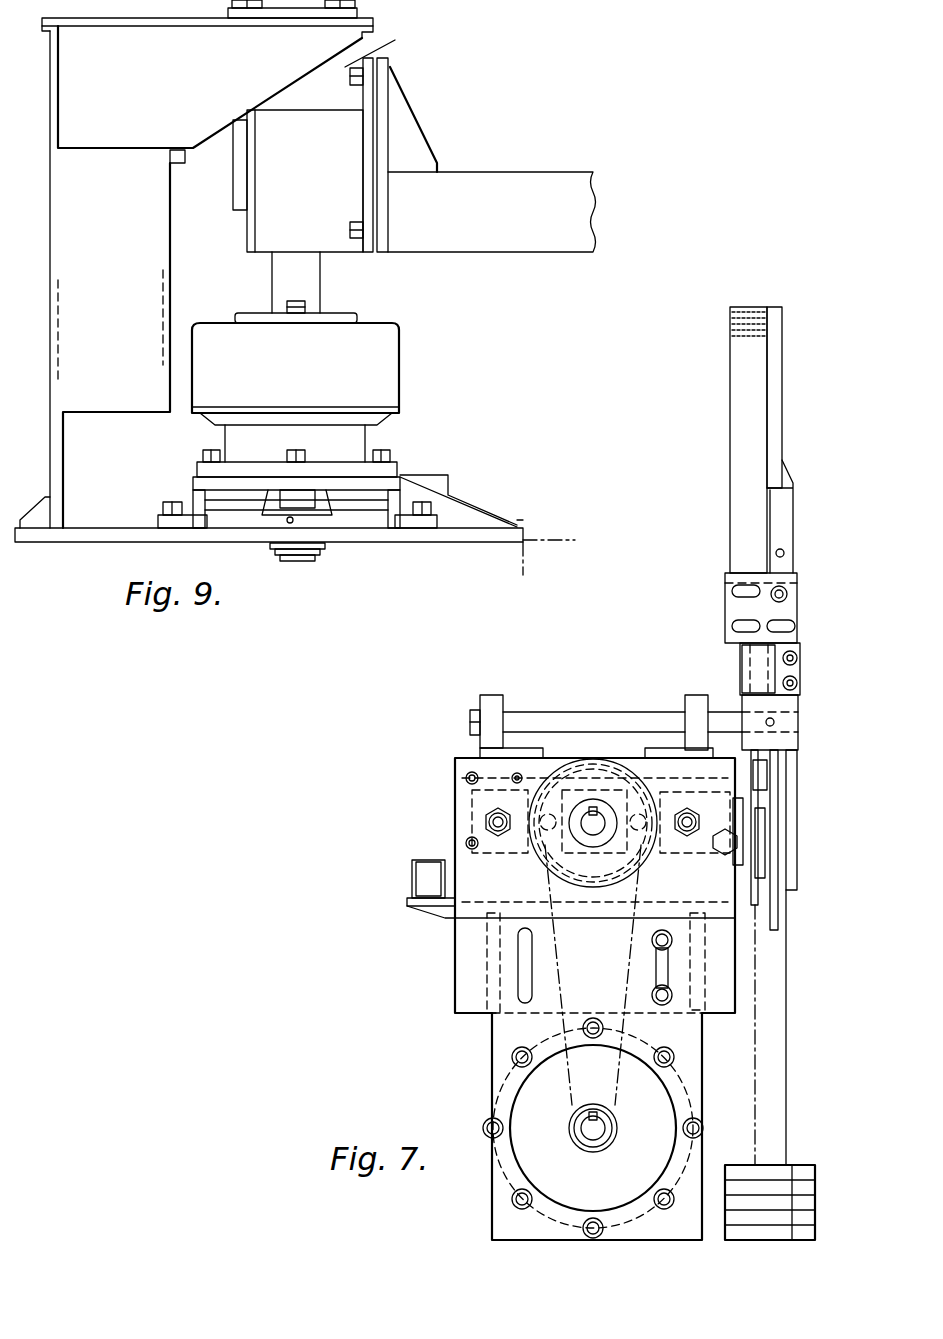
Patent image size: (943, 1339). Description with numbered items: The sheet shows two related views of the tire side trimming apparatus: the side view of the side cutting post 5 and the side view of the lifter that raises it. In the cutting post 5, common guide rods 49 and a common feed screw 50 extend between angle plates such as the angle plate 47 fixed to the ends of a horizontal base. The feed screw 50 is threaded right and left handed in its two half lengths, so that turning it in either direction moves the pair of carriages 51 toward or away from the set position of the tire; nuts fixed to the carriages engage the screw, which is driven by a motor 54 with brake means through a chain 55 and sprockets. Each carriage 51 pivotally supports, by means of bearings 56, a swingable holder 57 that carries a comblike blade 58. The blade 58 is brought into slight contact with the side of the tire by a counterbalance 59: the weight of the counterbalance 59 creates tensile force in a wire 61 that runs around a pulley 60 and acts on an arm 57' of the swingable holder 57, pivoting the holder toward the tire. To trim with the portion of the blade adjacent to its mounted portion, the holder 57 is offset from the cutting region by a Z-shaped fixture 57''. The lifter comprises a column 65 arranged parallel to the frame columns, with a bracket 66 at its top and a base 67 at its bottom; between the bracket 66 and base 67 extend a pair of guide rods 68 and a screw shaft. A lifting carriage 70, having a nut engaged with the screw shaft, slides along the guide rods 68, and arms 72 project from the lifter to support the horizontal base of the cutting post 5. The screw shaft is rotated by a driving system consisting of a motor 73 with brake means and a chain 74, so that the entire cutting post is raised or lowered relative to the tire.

In FIG. 7, the fluid coupling and speed control assembly 5 is at (679, 531).
In FIG. 7, the angle plate 47 is at (462, 770).
In FIG. 7, the common guide rods 49 is at (486, 823).
In FIG. 7, the common feed screw 50 is at (597, 835).
In FIG. 7, the carriage 51 is at (672, 866).
In FIG. 7, the motor with brake means 54 is at (500, 1172).
In FIG. 7, the chain 55 is at (550, 980).
In FIG. 7, the bearings 56 is at (487, 705).
In FIG. 7, the swingable holder 57 is at (735, 701).
In FIG. 7, the arm 57' is at (802, 957).
In FIG. 7, the Z-shaped fixture 57'' is at (734, 619).
In FIG. 7, the comblike blade 58 is at (782, 325).
In FIG. 7, the counterbalance 59 is at (805, 1170).
In FIG. 7, the pulley 60 is at (770, 905).
In FIG. 7, the wire 61 is at (786, 1041).
In FIG. 9, the column 65 is at (120, 275).
In FIG. 9, the bracket 66 is at (196, 87).
In FIG. 9, the base 67 is at (97, 539).
In FIG. 9, the guide rods 68 is at (305, 290).
In FIG. 9, the lifting carriage 70 is at (350, 68).
In FIG. 9, the arms 72 is at (512, 184).
In FIG. 9, the motor with brake means 73 is at (210, 328).
In FIG. 9, the chain 74 is at (246, 512).